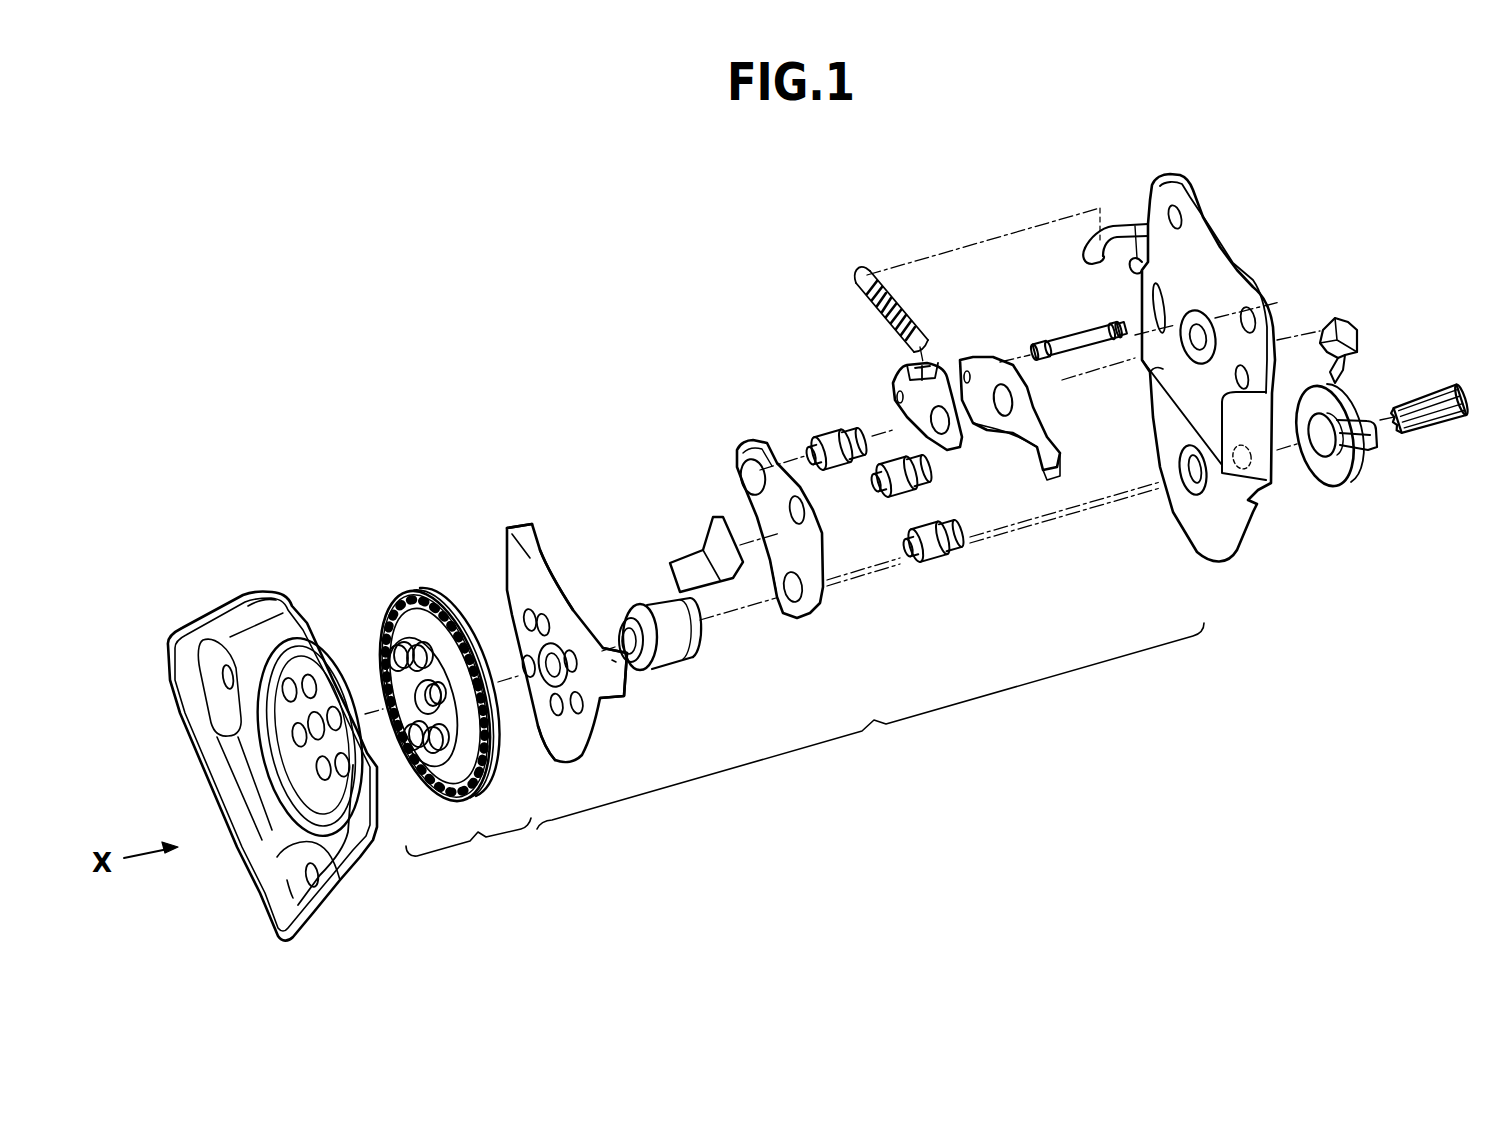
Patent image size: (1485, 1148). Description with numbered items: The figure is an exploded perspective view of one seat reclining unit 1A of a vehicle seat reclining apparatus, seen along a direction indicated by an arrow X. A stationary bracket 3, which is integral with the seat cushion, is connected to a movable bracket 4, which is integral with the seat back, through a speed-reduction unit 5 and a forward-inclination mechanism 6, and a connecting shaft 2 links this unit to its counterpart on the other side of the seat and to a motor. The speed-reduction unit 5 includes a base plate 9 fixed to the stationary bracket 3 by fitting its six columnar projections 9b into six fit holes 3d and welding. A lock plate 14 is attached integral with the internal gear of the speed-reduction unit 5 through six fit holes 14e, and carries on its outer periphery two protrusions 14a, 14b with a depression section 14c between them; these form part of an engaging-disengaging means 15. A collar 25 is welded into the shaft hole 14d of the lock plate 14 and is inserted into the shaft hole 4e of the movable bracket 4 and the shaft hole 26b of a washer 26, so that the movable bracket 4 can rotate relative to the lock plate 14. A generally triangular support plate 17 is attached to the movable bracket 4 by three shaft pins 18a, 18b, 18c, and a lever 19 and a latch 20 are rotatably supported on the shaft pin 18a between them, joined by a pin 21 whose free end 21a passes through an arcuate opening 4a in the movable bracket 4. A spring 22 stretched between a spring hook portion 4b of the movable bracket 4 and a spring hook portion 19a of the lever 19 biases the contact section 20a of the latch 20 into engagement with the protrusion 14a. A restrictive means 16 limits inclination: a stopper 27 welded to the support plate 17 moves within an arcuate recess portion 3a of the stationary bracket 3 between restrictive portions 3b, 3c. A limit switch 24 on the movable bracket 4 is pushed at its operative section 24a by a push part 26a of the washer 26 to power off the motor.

The seat reclining unit 1A is at (717, 803).
The connecting shaft 2 is at (1435, 424).
The stationary bracket 3 is at (269, 737).
The recess portion 3a is at (330, 656).
The restrictive portion 3b is at (288, 596).
The restrictive portion 3c is at (370, 745).
The fit holes 3d is at (318, 762).
The movable bracket 4 is at (1159, 379).
The opening 4a is at (1135, 224).
The spring hook portion 4b is at (1084, 245).
The shaft hole 4e is at (1190, 497).
The speed-reduction unit 5 is at (488, 880).
The forward-inclination mechanism 6 is at (888, 768).
The base plate 9 is at (435, 692).
The columnar projections 9b is at (432, 788).
The lock plate 14 is at (531, 597).
The protrusion 14a is at (512, 545).
The protrusion 14b is at (612, 698).
The depression section 14c is at (572, 606).
The shaft hole 14d is at (535, 735).
The fit holes 14e is at (526, 614).
The engaging-disengaging means 15 is at (935, 232).
The restrictive means 16 is at (678, 496).
The support plate 17 is at (823, 590).
The shaft pin 18a is at (836, 432).
The shaft pin 18b is at (900, 458).
The shaft pin 18c is at (945, 558).
The lever 19 is at (901, 413).
The spring hook portion 19a is at (905, 370).
The latch 20 is at (1010, 395).
The contact section 20a is at (995, 433).
The pin 21 is at (1074, 309).
The free end 21a is at (1117, 329).
The spring 22 is at (898, 304).
The limit switch 24 is at (1383, 319).
The operative section 24a is at (1348, 378).
The collar 25 is at (687, 654).
The washer 26 is at (1339, 474).
The push part 26a is at (1365, 450).
The shaft hole 26b is at (1320, 448).
The stopper 27 is at (716, 578).